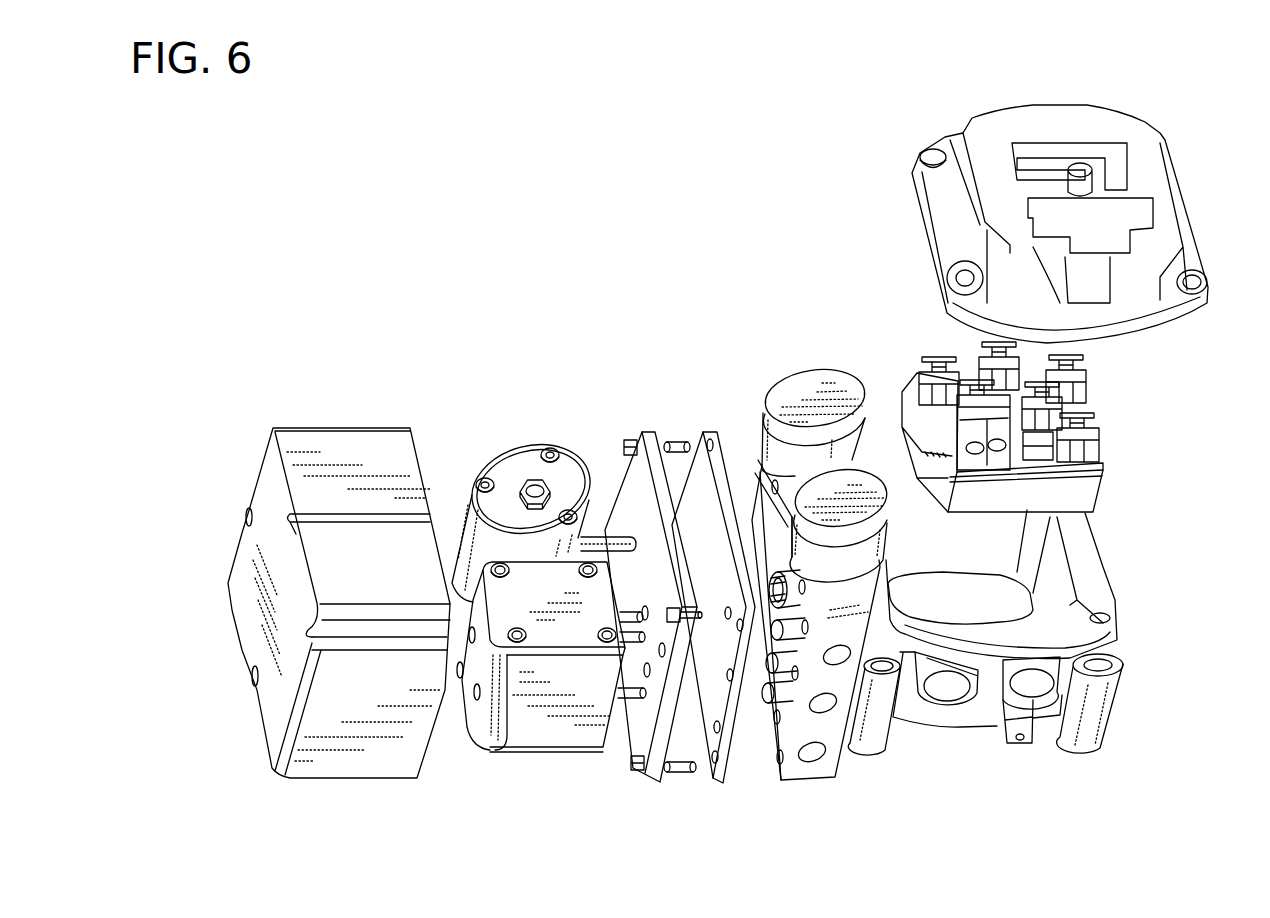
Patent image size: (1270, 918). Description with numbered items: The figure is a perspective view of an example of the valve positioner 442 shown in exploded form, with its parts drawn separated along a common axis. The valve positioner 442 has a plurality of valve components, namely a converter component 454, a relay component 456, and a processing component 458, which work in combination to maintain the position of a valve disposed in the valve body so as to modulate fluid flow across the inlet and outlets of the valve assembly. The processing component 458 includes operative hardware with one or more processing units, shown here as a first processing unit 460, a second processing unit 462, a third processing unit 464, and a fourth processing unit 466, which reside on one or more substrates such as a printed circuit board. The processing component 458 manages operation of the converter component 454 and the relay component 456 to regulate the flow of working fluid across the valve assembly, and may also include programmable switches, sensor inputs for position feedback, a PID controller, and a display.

The valve positioner 442 is at (419, 271).
The converter component 454 is at (502, 443).
The relay component 456 is at (578, 766).
The processing component 458 is at (1110, 428).
The first processing unit 460 is at (920, 377).
The second processing unit 462 is at (982, 358).
The third processing unit 464 is at (1087, 380).
The fourth processing unit 466 is at (1103, 452).